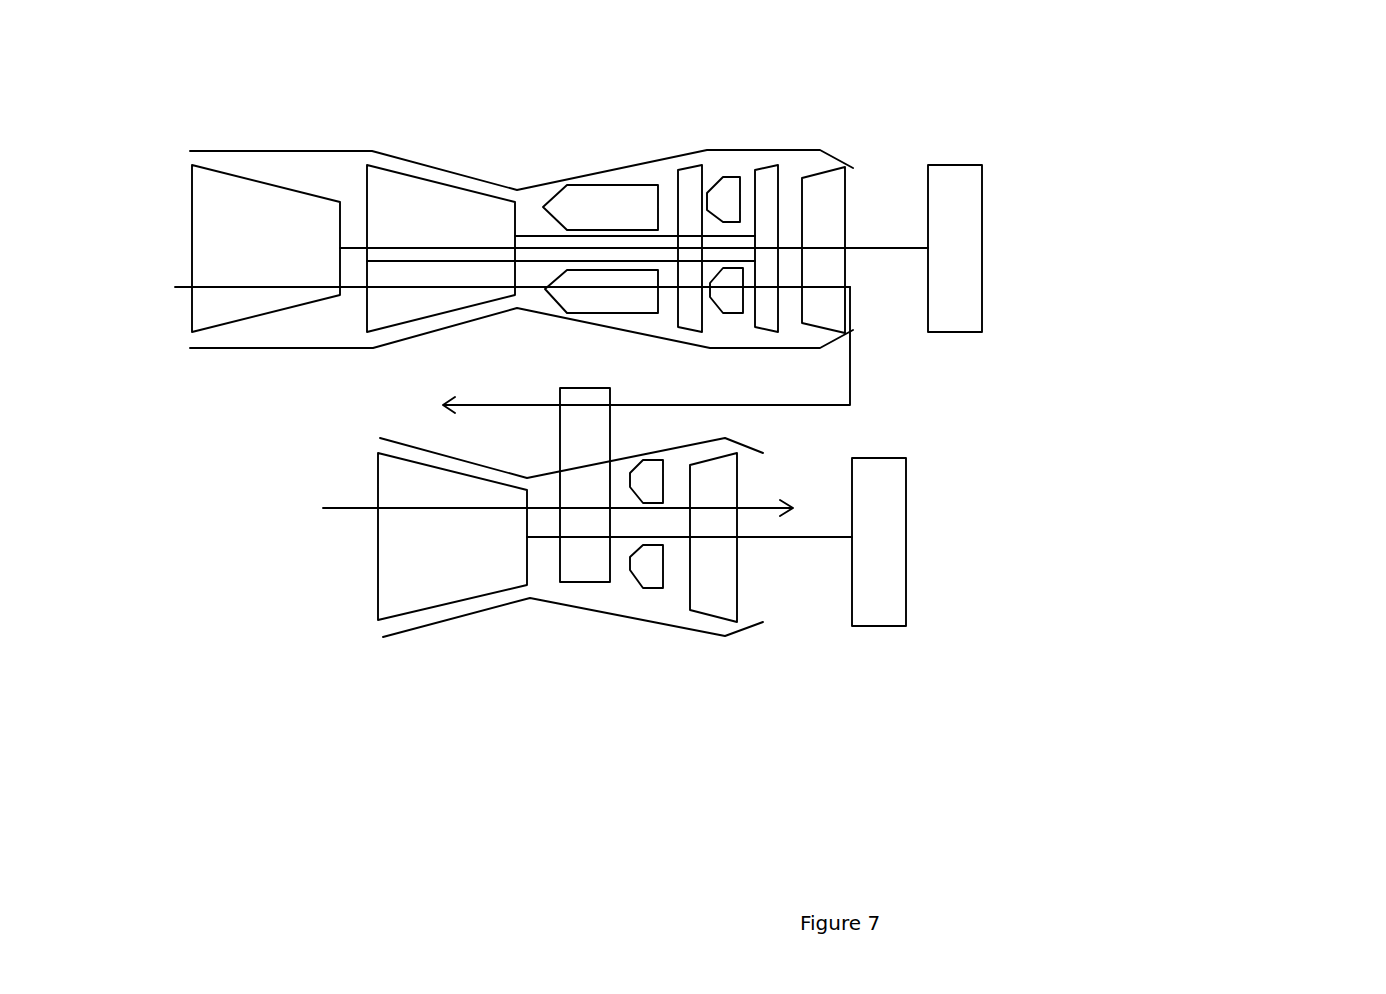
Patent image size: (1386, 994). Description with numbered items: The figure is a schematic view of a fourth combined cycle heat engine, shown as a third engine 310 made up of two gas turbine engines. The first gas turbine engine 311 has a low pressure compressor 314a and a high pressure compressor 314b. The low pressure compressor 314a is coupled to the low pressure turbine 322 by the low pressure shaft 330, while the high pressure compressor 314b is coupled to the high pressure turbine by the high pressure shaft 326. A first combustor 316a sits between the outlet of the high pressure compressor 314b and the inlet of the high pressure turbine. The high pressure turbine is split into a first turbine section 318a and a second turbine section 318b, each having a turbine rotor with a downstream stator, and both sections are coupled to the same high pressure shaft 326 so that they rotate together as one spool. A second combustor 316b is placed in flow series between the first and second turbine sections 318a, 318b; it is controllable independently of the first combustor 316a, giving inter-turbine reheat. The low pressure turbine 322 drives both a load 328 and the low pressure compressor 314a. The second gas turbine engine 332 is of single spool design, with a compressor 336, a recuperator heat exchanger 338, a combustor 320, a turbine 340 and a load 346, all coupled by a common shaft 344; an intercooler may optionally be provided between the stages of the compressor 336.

The third engine 310 is at (1200, 376).
The first gas turbine engine 311 is at (860, 102).
The low pressure compressor 314a is at (298, 200).
The high pressure compressor 314b is at (377, 217).
The first combustor 316a is at (558, 183).
The second combustor 316b is at (723, 308).
The first turbine section 318a is at (768, 167).
The second turbine section 318b is at (688, 165).
The combustor 320 is at (647, 587).
The low pressure turbine 322 is at (825, 165).
The high pressure shaft 326 is at (547, 262).
The load 328 is at (988, 192).
The low pressure shaft 330 is at (877, 250).
The second gas turbine engine 332 is at (608, 693).
The compressor 336 is at (378, 582).
The recuperator heat exchanger 338 is at (598, 587).
The turbine 340 is at (737, 565).
The common shaft 344 is at (817, 537).
The load 346 is at (907, 583).